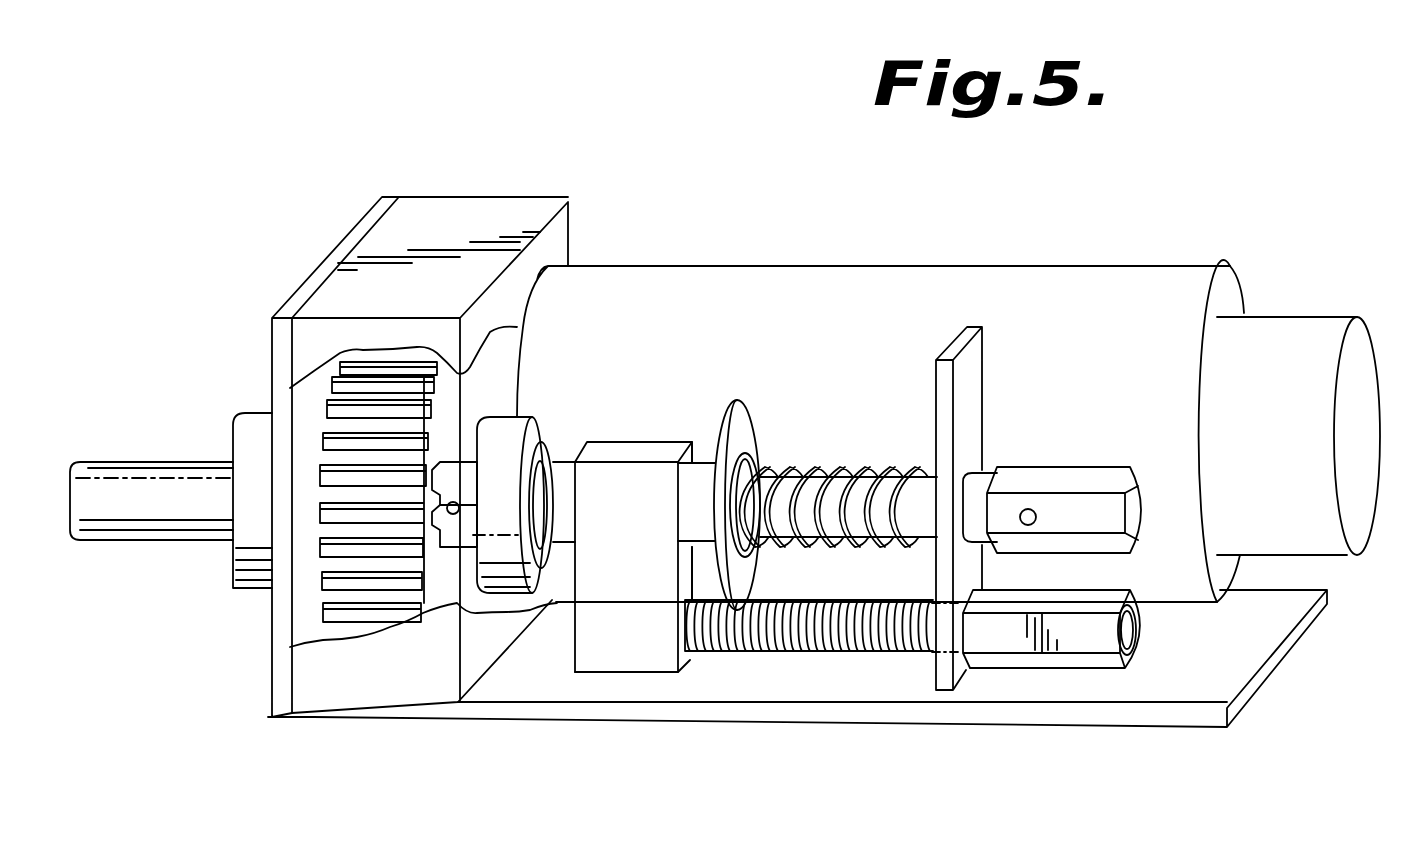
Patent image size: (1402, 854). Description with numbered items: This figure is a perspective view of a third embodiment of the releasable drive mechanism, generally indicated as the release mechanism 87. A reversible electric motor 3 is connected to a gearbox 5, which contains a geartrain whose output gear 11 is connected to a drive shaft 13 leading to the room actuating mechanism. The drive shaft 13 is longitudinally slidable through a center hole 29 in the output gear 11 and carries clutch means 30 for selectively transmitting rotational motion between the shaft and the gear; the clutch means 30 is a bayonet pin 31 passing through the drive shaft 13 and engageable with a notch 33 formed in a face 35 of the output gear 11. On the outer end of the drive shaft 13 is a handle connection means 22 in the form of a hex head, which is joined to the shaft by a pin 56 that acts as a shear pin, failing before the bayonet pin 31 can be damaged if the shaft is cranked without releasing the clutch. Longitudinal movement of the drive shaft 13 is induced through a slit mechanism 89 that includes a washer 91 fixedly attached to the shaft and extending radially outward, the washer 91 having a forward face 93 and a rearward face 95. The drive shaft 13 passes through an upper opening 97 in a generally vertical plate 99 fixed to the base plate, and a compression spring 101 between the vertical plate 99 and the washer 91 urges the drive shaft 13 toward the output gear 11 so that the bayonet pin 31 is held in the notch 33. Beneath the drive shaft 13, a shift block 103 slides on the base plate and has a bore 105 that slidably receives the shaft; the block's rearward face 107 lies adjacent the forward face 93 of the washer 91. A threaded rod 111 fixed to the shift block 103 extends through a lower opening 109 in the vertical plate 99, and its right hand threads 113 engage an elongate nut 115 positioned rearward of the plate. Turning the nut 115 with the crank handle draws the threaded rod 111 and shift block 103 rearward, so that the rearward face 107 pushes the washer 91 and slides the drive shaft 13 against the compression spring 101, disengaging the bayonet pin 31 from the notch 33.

The reversible electric motor 3 is at (1232, 300).
The gearbox 5 is at (473, 200).
The output gear 11 is at (352, 618).
The drive shaft 13 is at (117, 458).
The handle connection means 22 is at (1102, 478).
The center hole 29 is at (460, 463).
The clutch means 30 is at (450, 558).
The bayonet pin 31 is at (495, 417).
The notch 33 is at (433, 497).
The face 35 is at (423, 560).
The pin 56 is at (1033, 523).
The release mechanism 87 is at (605, 737).
The slit mechanism 89 is at (684, 400).
The washer 91 is at (748, 400).
The forward face 93 is at (708, 650).
The rearward face 95 is at (740, 577).
The upper opening 97 is at (983, 473).
The vertical plate 99 is at (983, 370).
The compression spring 101 is at (895, 466).
The shift block 103 is at (583, 675).
The bore 105 is at (680, 565).
The rearward face 107 is at (690, 580).
The lower opening 109 is at (930, 600).
The threaded rod 111 is at (807, 652).
The right hand threads 113 is at (887, 652).
The elongate nut 115 is at (1043, 668).